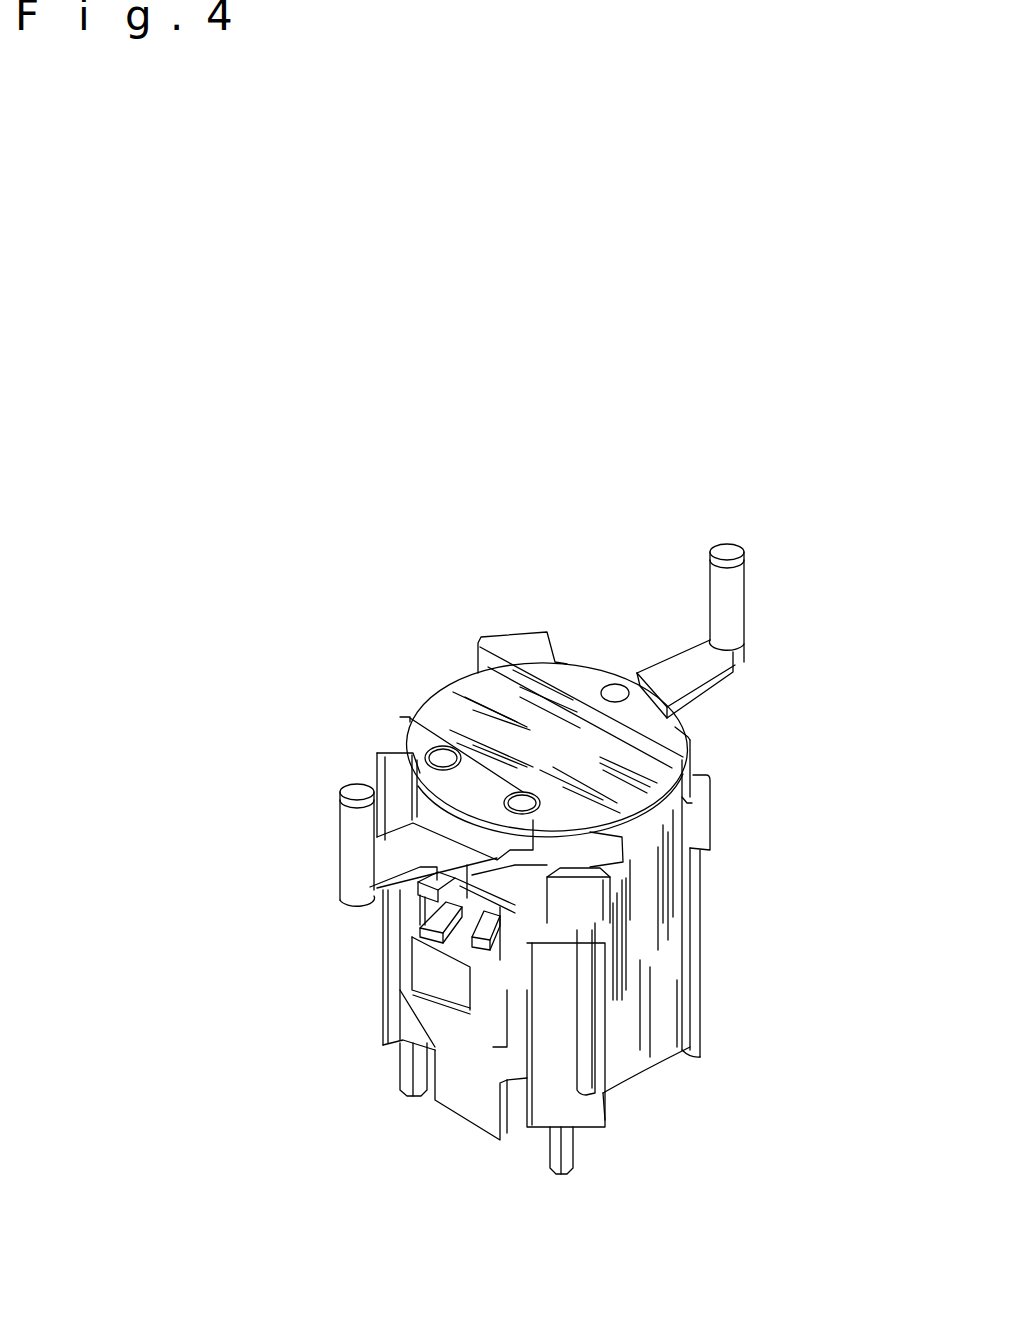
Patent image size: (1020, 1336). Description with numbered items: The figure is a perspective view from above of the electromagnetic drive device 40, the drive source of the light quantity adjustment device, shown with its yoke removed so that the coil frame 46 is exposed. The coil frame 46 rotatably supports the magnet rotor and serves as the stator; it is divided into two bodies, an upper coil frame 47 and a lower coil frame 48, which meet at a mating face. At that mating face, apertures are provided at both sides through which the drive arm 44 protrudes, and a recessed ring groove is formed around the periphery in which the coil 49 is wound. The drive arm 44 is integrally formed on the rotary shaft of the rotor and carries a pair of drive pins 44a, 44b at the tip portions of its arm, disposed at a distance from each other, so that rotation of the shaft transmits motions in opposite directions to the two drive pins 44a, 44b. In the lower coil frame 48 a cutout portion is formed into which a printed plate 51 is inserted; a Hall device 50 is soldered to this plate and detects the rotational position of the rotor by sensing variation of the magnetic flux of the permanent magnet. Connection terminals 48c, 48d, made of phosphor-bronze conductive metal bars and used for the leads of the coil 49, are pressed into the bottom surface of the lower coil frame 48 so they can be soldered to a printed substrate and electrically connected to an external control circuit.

The electromagnetic drive device 40 is at (790, 470).
The drive arm 44 is at (715, 676).
The drive pin 44a is at (735, 581).
The drive pin 44b is at (343, 832).
The coil frame 46 is at (853, 783).
The upper coil frame 47 is at (690, 768).
The lower coil frame 48 is at (698, 905).
The connection terminal 48c is at (555, 1170).
The connection terminal 48d is at (405, 1077).
The coil 49 is at (650, 1060).
The Hall device 50 is at (430, 975).
The printed plate 51 is at (462, 1105).